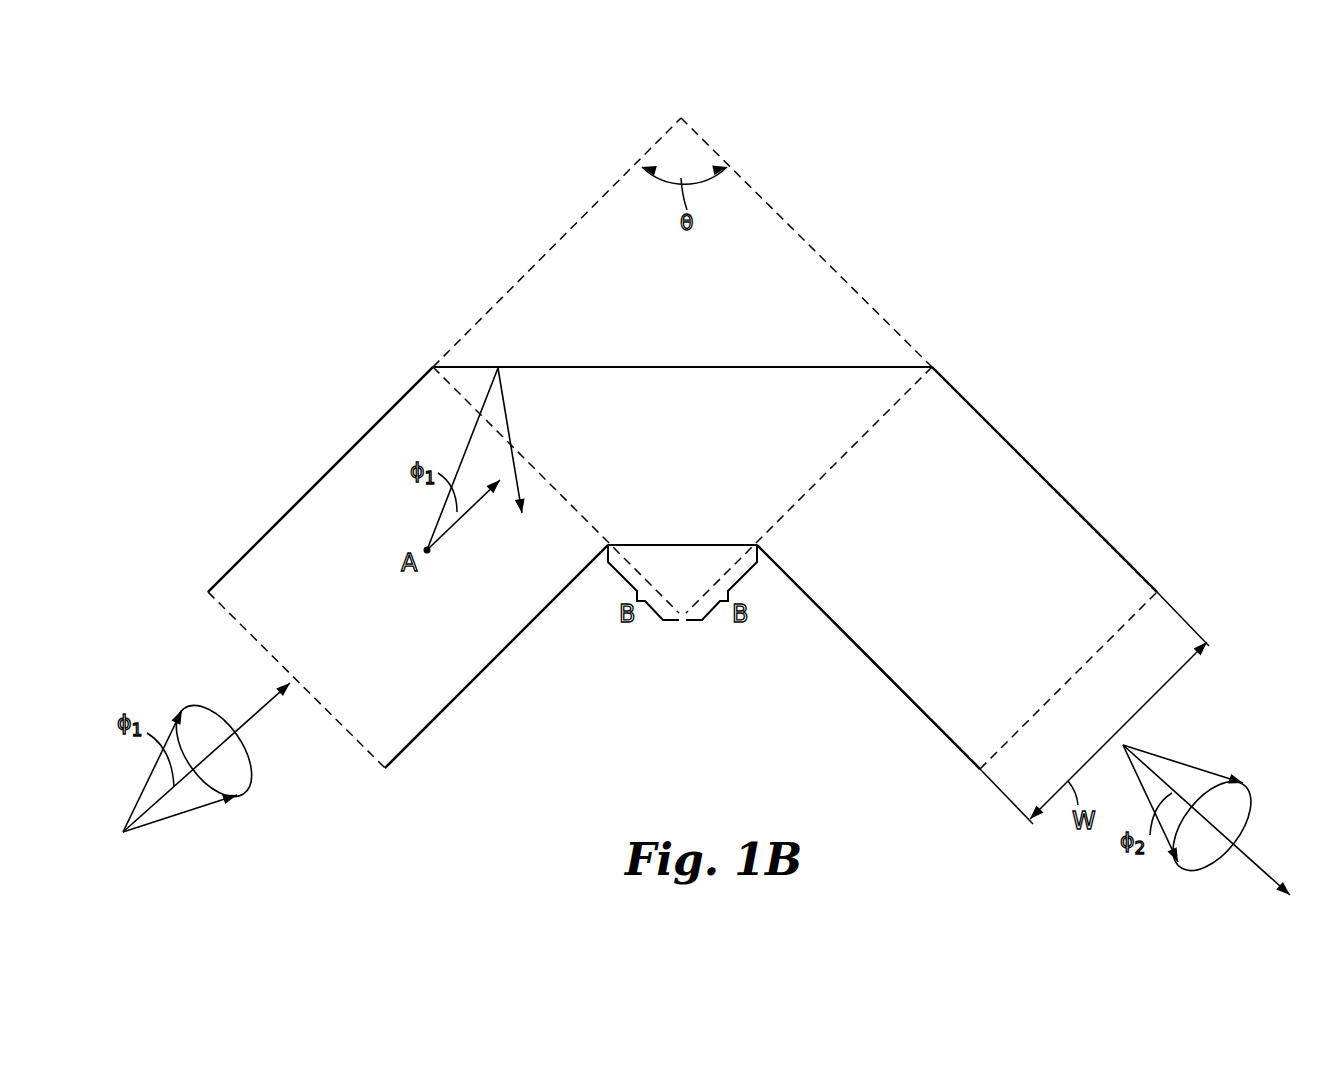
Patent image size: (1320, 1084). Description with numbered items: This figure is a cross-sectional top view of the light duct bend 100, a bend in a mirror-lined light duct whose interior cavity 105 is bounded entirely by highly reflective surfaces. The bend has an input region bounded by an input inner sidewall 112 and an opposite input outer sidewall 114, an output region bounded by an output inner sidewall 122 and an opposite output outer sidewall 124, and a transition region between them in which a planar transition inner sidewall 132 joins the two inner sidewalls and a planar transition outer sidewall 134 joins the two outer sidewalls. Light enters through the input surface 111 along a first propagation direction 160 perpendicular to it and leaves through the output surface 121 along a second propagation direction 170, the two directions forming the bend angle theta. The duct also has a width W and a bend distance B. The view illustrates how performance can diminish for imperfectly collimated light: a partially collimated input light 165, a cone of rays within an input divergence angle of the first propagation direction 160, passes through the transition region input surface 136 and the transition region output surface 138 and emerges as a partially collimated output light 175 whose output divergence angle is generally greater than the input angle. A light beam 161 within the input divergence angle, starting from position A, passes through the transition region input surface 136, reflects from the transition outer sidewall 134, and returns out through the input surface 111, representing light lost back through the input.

The light duct bend 100 is at (1012, 272).
The interior cavity 105 is at (407, 640).
The input surface 111 is at (361, 745).
The input inner sidewall 112 is at (471, 682).
The input outer sidewall 114 is at (283, 516).
The output surface 121 is at (1023, 727).
The output inner sidewall 122 is at (886, 677).
The output outer sidewall 124 is at (1064, 499).
The transition inner sidewall 132 is at (687, 545).
The transition outer sidewall 134 is at (695, 367).
The transition region input surface 136 is at (594, 529).
The transition region output surface 138 is at (817, 481).
The first light propagation direction 160 is at (472, 507).
The light beam 161 is at (466, 450).
The partially collimated input light 165 is at (204, 830).
The second light propagation direction 170 is at (1268, 878).
The partially collimated output light 175 is at (1203, 748).